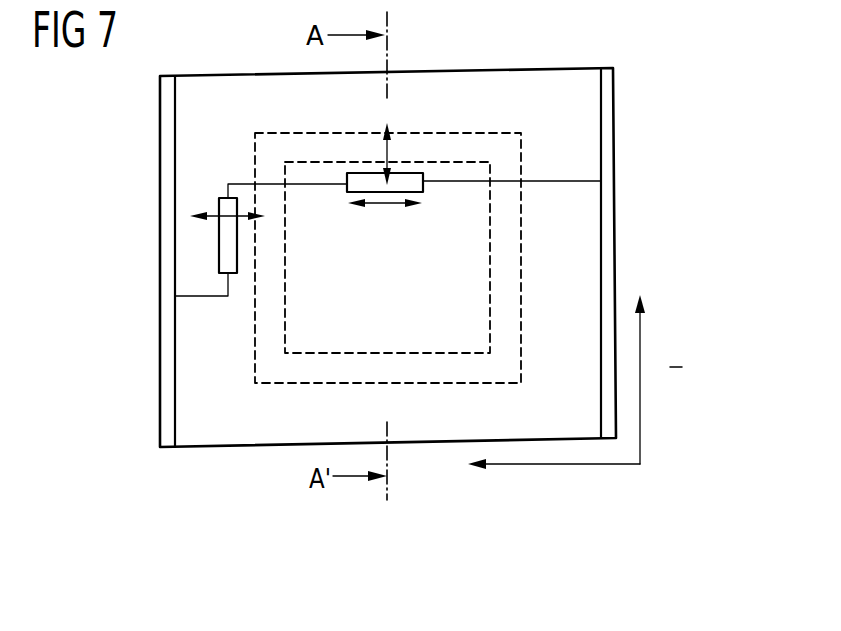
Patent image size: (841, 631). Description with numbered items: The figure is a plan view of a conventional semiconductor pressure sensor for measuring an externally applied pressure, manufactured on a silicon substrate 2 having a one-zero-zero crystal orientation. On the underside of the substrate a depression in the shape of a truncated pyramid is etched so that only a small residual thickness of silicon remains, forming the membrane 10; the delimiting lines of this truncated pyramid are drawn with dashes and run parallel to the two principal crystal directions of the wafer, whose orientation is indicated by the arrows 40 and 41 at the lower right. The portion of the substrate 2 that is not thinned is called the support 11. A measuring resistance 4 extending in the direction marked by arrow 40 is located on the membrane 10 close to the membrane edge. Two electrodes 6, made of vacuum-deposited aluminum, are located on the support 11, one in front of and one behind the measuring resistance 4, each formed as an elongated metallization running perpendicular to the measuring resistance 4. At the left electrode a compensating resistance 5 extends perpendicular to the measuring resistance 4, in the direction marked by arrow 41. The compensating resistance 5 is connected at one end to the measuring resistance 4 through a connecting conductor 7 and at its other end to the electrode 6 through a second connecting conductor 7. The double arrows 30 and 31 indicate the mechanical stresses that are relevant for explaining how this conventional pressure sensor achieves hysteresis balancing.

The substrate 2 is at (614, 105).
The measuring resistance 4 is at (421, 186).
The compensating resistance 5 is at (228, 247).
The electrode 6 is at (168, 74).
The connecting conductor 7 is at (233, 182).
The membrane 10 is at (473, 257).
The support 11 is at (588, 216).
The double arrow 30 is at (390, 204).
The double arrow 31 is at (385, 146).
The arrow 40 is at (609, 466).
The arrow 41 is at (641, 414).